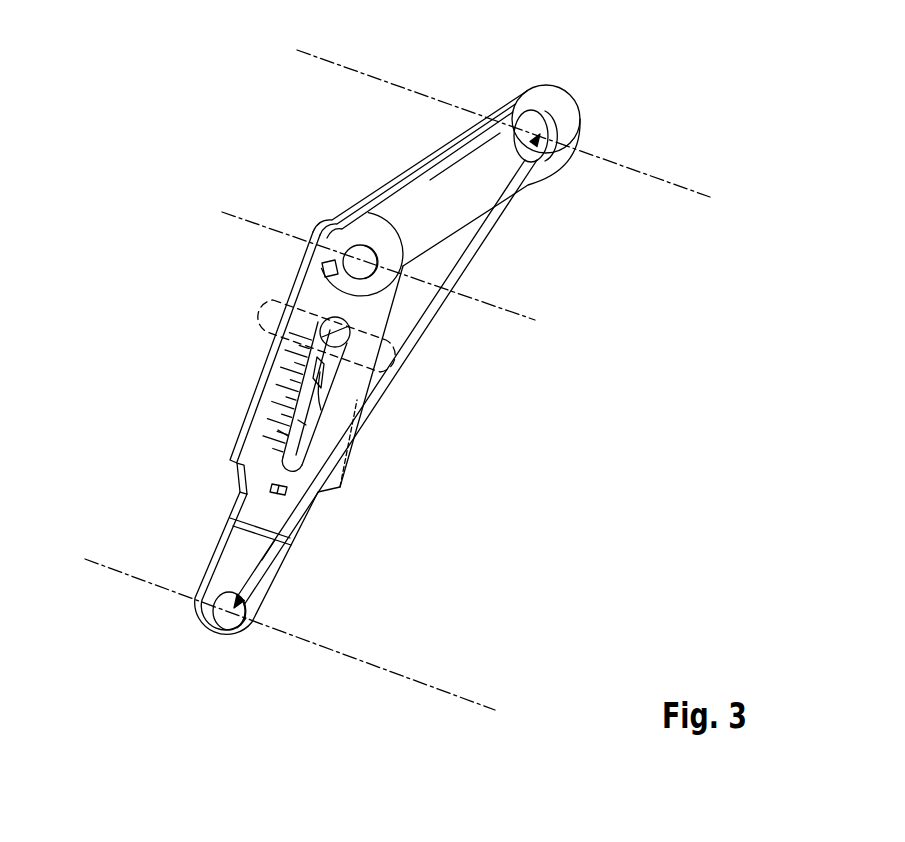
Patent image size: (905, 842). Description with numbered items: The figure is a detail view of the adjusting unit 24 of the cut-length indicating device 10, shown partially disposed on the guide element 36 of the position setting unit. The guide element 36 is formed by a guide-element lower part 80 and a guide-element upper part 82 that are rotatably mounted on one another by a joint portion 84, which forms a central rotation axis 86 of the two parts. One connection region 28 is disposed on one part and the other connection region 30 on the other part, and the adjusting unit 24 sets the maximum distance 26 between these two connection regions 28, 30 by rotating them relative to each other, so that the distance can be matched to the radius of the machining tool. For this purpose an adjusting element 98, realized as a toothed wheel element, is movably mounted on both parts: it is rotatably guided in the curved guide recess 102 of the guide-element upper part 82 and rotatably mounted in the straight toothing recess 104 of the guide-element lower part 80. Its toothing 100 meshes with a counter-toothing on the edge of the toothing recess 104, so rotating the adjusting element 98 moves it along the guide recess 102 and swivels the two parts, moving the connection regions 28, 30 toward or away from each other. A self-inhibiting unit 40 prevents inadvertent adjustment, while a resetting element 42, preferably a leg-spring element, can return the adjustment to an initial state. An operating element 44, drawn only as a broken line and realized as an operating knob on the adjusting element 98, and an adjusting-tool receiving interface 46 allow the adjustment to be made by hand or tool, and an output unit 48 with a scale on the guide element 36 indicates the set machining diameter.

The cut-length indicating device 10 is at (153, 81).
The adjusting unit 24 is at (203, 371).
The maximum distance 26 is at (414, 334).
The connection region 28 is at (567, 160).
The connection region 30 is at (242, 622).
The guide element 36 is at (329, 176).
The self-inhibiting unit 40 is at (238, 398).
The resetting element 42 is at (318, 266).
The operating element 44 is at (264, 316).
The adjusting-tool receiving interface 46 is at (322, 328).
The output unit 48 is at (225, 506).
The guide-element lower part 80 is at (262, 586).
The guide-element upper part 82 is at (426, 186).
The joint portion 84 is at (364, 250).
The central rotation axis 86 is at (536, 318).
The adjusting element 98 is at (318, 362).
The toothing 100 is at (320, 394).
The guide recess 102 is at (284, 440).
The toothing recess 104 is at (312, 420).